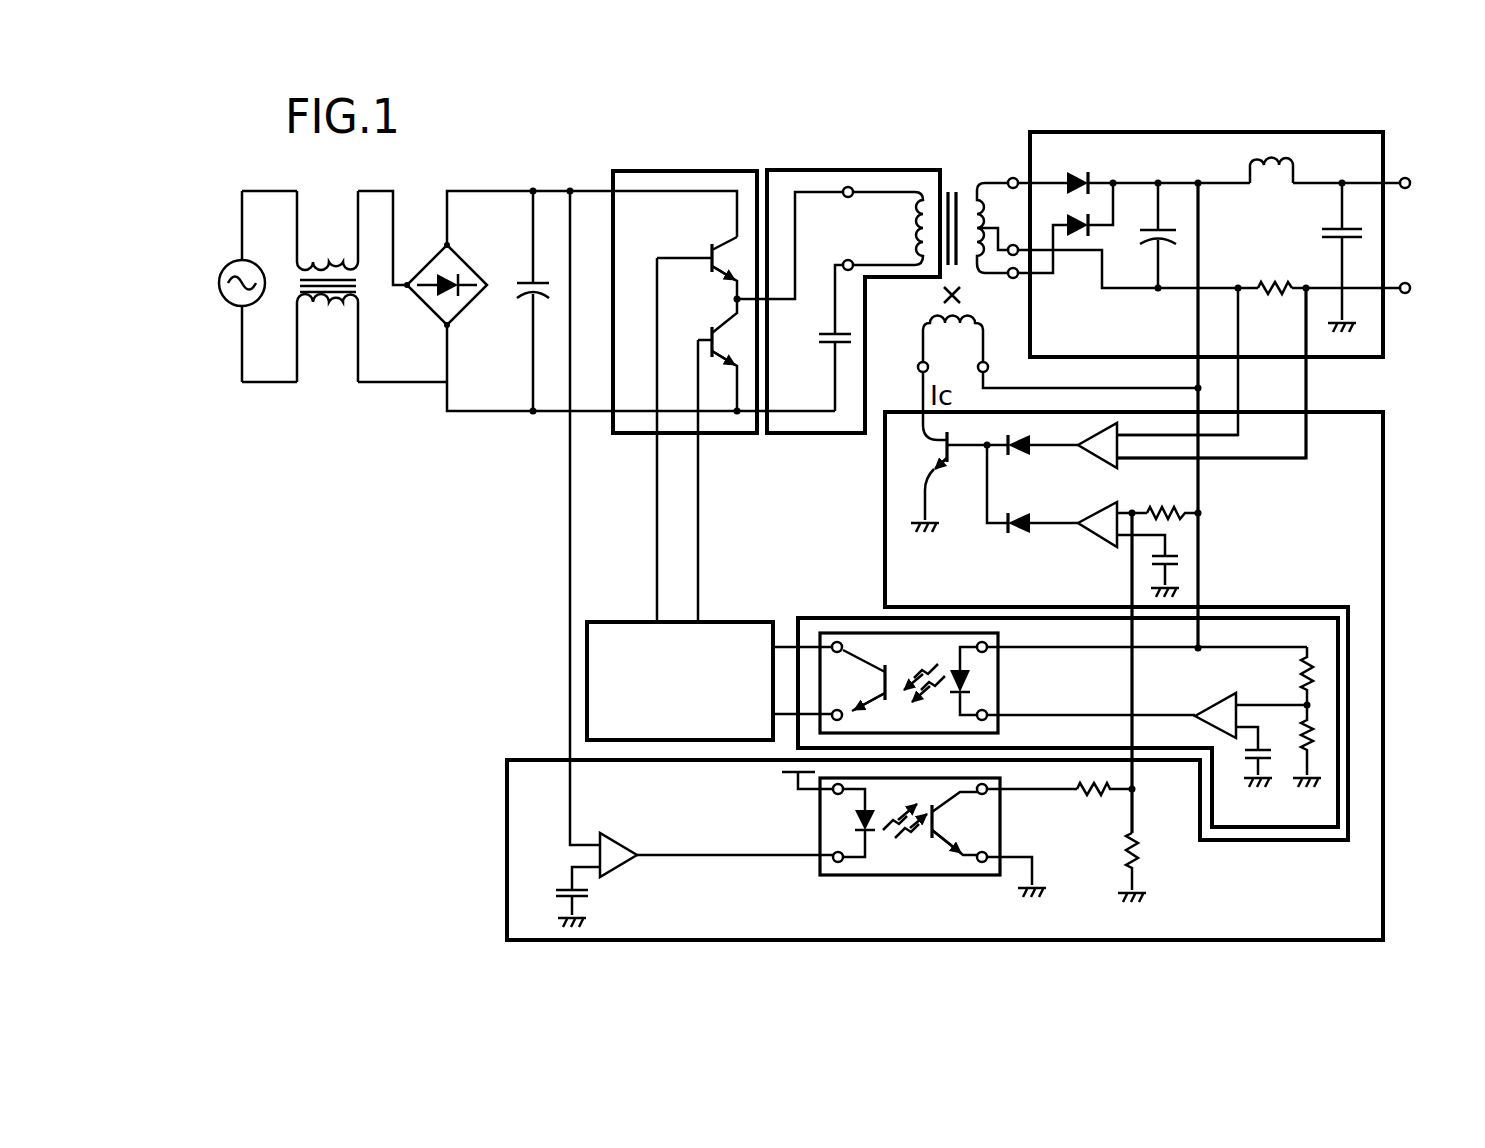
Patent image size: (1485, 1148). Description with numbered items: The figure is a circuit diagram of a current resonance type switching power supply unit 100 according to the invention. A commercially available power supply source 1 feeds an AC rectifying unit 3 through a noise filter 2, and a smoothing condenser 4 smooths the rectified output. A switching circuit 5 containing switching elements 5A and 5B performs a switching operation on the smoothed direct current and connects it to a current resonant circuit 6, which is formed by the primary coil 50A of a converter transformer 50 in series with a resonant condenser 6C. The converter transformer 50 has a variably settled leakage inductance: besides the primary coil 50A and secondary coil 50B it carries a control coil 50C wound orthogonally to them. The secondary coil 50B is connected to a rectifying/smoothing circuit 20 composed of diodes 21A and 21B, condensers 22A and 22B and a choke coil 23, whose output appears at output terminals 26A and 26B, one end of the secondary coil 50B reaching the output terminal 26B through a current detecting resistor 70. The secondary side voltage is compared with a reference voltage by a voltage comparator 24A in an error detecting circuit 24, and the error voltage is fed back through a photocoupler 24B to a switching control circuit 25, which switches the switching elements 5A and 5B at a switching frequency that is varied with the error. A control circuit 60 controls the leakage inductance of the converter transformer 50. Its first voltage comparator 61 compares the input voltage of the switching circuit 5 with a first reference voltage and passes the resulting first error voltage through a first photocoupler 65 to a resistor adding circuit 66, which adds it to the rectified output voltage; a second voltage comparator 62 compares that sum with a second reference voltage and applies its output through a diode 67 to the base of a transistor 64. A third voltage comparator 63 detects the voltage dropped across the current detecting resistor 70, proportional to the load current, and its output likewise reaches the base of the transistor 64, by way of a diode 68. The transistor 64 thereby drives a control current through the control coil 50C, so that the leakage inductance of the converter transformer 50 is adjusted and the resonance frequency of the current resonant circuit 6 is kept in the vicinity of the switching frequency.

The current resonance type switching power supply unit 100 is at (283, 845).
The commercially available power supply source 1 is at (232, 265).
The noise filter 2 is at (325, 312).
The AC rectifying unit 3 is at (422, 314).
The smoothing condenser 4 is at (528, 278).
The switching circuit 5 is at (685, 371).
The switching element 5A is at (712, 246).
The switching element 5B is at (712, 334).
The current resonant circuit 6 is at (838, 276).
The resonant condenser 6C is at (831, 344).
The converter transformer 50 is at (941, 246).
The primary coil 50A is at (914, 238).
The secondary coil 50B is at (975, 190).
The control coil 50C is at (928, 320).
The rectifying/smoothing circuit 20 is at (1239, 217).
The diode 21A is at (1073, 178).
The diode 21B is at (1080, 238).
The condenser 22A is at (1150, 242).
The condenser 22B is at (1330, 236).
The choke coil 23 is at (1295, 174).
The current detecting resistor 70 is at (1275, 295).
The output terminal 26A is at (1409, 178).
The output terminal 26B is at (1409, 283).
The control circuit 60 is at (981, 657).
The first voltage comparator 61 is at (620, 843).
The second voltage comparator 62 is at (1097, 538).
The third voltage comparator 63 is at (1097, 460).
The transistor 64 is at (950, 465).
The photocoupler 65 is at (918, 876).
The resistor adding circuit 66 is at (1116, 849).
The diode 67 is at (1013, 535).
The diode 68 is at (1013, 458).
The error detecting circuit 24 is at (1068, 693).
The voltage comparator 24A is at (1218, 702).
The photocoupler 24B is at (1000, 688).
The switching control circuit 25 is at (618, 622).